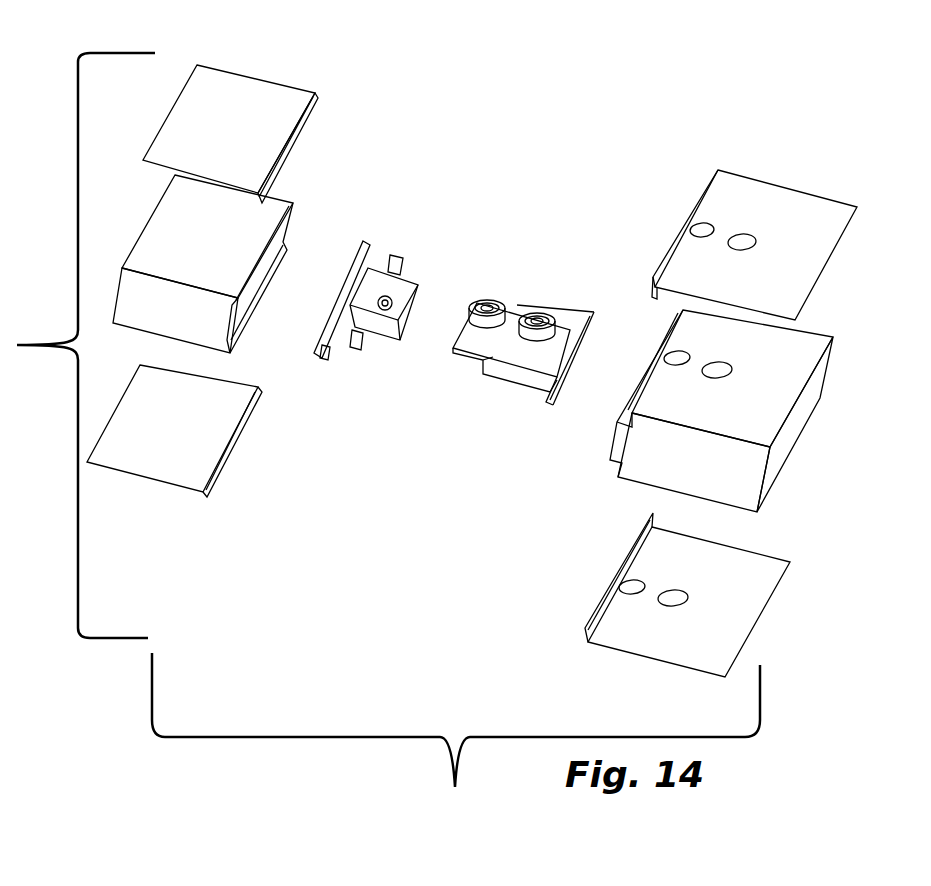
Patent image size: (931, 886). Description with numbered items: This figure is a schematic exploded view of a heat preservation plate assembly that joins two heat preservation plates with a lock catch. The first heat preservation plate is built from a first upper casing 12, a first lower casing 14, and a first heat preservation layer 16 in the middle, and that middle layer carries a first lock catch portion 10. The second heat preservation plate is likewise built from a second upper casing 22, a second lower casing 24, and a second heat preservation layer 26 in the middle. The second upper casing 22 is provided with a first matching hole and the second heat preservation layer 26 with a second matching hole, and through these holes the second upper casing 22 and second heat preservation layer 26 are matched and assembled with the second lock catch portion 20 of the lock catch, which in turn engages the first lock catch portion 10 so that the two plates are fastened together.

The first lock catch portion 10 is at (367, 282).
The first upper casing 12 is at (216, 127).
The first lower casing 14 is at (215, 425).
The first heat preservation layer 16 is at (248, 237).
The second lock catch portion 20 is at (538, 333).
The second upper casing 22 is at (798, 215).
The second lower casing 24 is at (653, 535).
The second heat preservation layer 26 is at (698, 335).